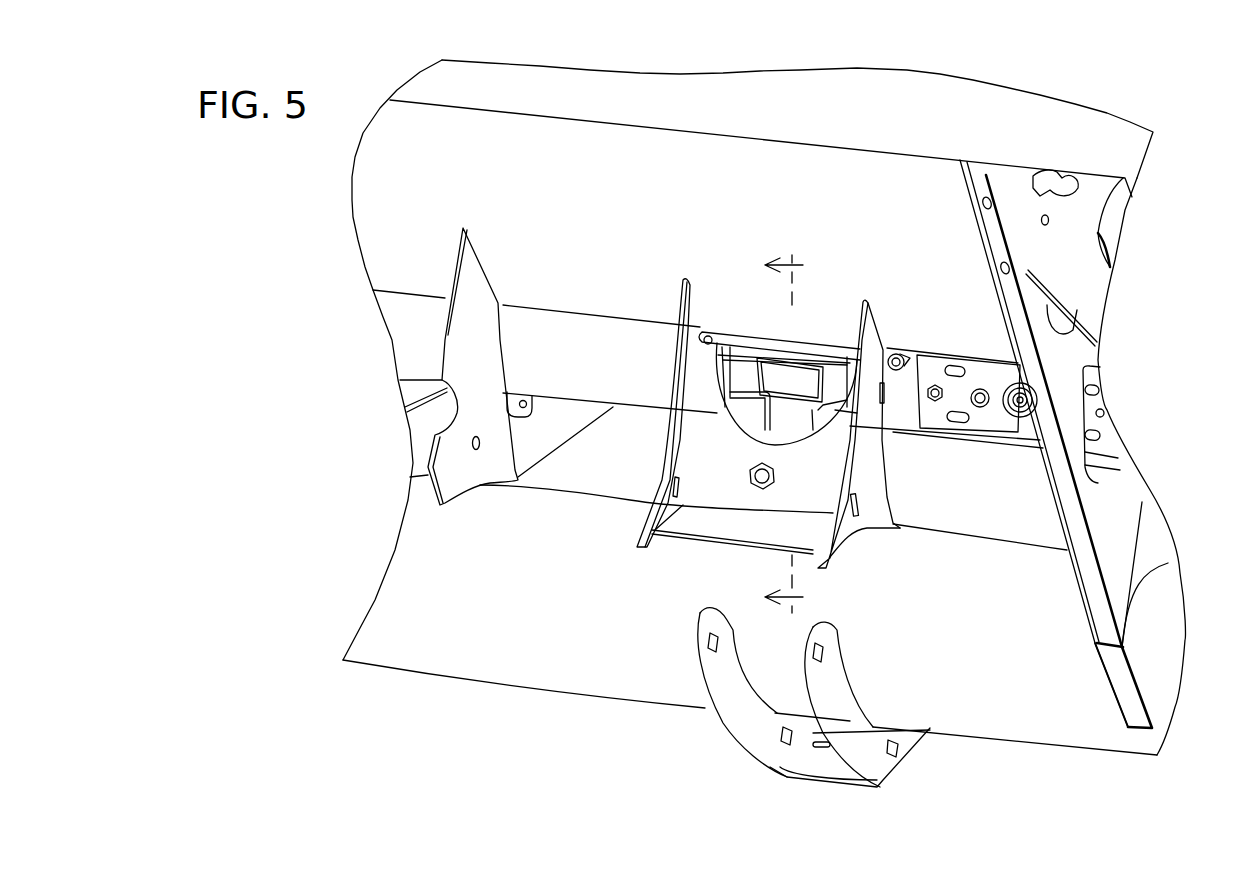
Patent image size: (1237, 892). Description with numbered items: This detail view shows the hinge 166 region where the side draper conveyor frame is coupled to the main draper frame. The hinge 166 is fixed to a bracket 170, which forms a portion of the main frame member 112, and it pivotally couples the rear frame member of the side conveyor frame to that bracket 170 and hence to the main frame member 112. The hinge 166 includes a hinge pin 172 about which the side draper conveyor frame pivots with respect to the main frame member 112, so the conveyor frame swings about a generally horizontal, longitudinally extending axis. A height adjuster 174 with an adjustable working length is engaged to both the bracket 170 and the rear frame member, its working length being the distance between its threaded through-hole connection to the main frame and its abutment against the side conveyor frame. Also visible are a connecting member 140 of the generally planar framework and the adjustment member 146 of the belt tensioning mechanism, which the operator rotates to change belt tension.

The main frame member 112 is at (1040, 742).
The connecting member 140 is at (802, 378).
The adjustment member 146 is at (890, 460).
The hinge 166 is at (1003, 420).
The bracket 170 is at (720, 477).
The hinge pin 172 is at (900, 355).
The height adjuster 174 is at (757, 490).